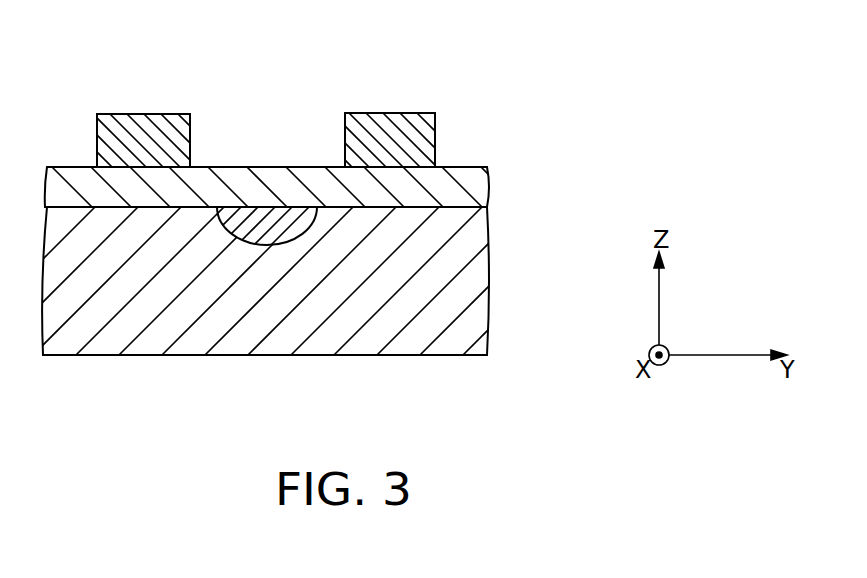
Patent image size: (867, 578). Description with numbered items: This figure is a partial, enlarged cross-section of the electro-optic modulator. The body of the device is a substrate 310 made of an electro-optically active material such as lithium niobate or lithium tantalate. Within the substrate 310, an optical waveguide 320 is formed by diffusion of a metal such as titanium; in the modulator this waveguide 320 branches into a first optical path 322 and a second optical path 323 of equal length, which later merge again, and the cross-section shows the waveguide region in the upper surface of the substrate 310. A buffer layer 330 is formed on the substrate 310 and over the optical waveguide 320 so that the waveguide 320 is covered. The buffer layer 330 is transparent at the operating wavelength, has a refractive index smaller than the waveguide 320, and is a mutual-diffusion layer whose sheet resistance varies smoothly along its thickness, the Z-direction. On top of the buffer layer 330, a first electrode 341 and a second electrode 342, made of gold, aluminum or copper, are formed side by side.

The substrate 310 is at (475, 280).
The optical waveguide 320 is at (303, 303).
The first optical path 322 is at (303, 303).
The second optical path 323 is at (272, 235).
The buffer layer 330 is at (487, 183).
The first electrode 341 is at (256, 106).
The second electrode 342 is at (135, 120).